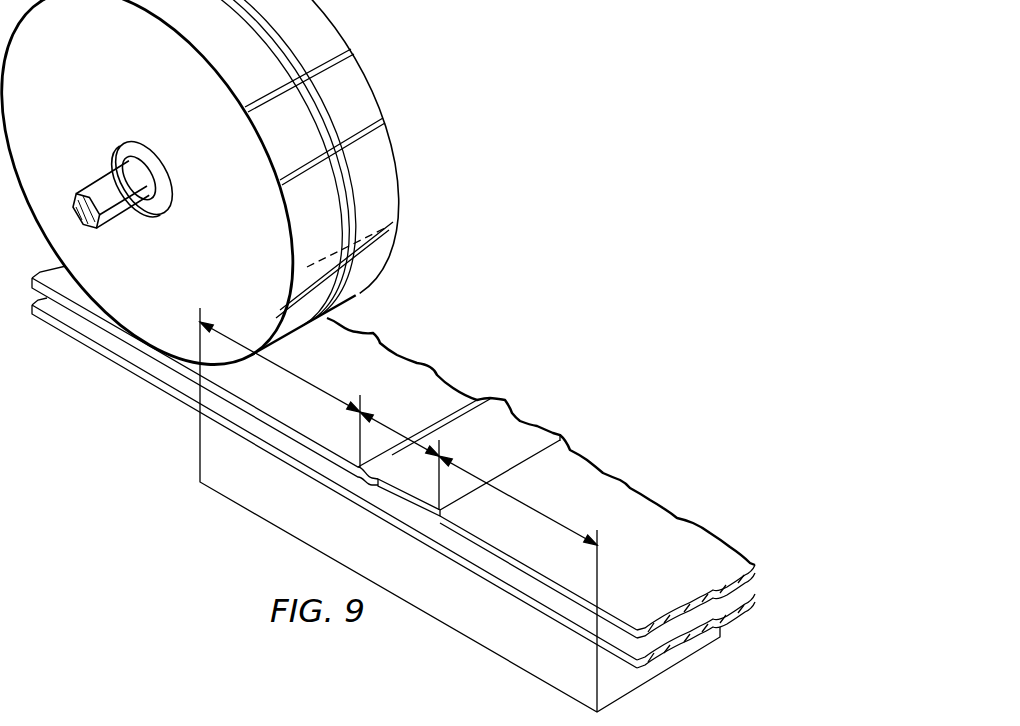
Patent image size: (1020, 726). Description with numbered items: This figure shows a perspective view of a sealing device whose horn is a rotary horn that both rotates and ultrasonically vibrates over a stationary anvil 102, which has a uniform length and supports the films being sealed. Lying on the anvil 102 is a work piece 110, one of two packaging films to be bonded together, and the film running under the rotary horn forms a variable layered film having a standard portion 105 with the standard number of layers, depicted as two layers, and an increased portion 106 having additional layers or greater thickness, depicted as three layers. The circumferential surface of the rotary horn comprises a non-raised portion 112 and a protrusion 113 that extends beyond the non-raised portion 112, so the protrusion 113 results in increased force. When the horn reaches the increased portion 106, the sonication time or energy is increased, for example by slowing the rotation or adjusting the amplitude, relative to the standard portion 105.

The anvil 102 is at (273, 510).
The standard portion 105 is at (312, 384).
The increased portion 106 is at (383, 424).
The work piece 110 is at (165, 393).
The non-raised portion 112 is at (347, 197).
The protrusion 113 is at (362, 85).